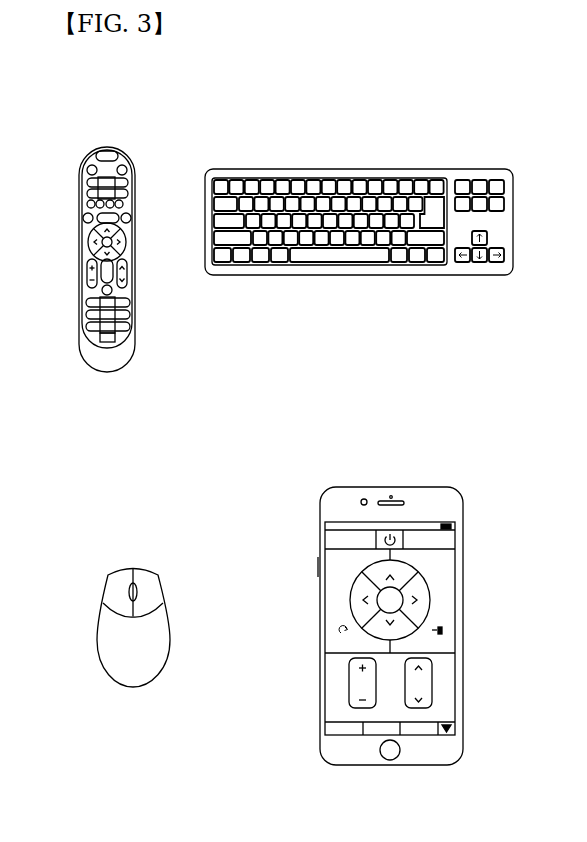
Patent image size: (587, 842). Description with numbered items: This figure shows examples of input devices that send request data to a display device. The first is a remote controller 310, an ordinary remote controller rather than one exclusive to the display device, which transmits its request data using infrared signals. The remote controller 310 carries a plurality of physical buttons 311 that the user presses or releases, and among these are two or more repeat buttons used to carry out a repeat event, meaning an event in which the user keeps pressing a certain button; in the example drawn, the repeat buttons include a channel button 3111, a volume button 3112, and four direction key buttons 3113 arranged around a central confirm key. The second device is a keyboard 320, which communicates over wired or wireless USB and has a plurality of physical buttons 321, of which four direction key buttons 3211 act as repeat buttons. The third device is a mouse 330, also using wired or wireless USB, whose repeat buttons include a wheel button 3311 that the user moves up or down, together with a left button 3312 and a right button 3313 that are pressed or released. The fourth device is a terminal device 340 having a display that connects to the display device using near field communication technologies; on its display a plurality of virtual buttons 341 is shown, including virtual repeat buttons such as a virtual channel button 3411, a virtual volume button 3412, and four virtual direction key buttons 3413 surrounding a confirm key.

The remote controller 310 is at (80, 131).
The buttons 311 is at (128, 193).
The channel button 3111 is at (128, 268).
The volume button 3112 is at (86, 268).
The direction key buttons 3113 is at (88, 242).
The keyboard 320 is at (233, 131).
The buttons 321 is at (268, 182).
The direction key buttons 3211 is at (490, 238).
The mouse 330 is at (87, 471).
The wheel button 3311 is at (137, 583).
The left button 3312 is at (110, 588).
The right button 3313 is at (155, 588).
The terminal device 340 is at (333, 471).
The virtual buttons 341 is at (450, 543).
The channel button 3411 is at (432, 697).
The volume button 3412 is at (349, 697).
The direction/confirm button 3413 is at (343, 606).